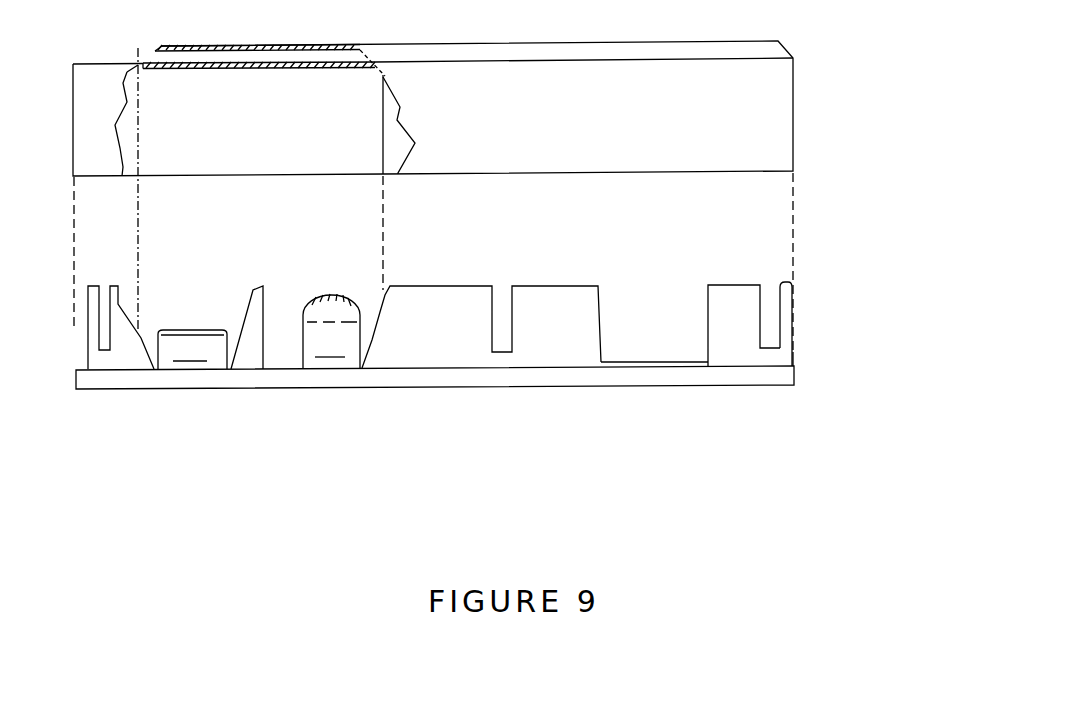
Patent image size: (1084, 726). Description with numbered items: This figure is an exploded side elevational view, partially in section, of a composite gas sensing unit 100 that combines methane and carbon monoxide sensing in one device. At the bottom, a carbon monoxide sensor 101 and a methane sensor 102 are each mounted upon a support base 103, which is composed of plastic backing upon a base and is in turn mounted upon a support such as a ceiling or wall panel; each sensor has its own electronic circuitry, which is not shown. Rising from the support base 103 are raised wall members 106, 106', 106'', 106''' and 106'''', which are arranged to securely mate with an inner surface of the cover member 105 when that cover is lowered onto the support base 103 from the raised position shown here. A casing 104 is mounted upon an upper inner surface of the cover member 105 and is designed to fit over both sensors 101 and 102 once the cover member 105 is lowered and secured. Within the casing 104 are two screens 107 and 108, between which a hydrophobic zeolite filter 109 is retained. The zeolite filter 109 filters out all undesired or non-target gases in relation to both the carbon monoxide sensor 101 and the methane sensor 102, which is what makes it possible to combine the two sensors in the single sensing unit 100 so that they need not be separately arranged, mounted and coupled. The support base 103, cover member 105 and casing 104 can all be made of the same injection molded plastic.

The single sensing unit 100 is at (488, 271).
The carbon monoxide sensor 101 is at (312, 290).
The methane sensor 102 is at (196, 320).
The support base 103 is at (302, 389).
The casing 104 is at (283, 153).
The cover member 105 is at (588, 130).
The raised wall member 106 is at (99, 367).
The raised wall member 106' is at (229, 367).
The raised wall member 106'' is at (481, 327).
The raised wall member 106''' is at (709, 296).
The raised wall member 106'''' is at (856, 324).
The screen 107 is at (183, 48).
The screen 108 is at (215, 64).
The hydrophobic zeolite filter 109 is at (310, 60).